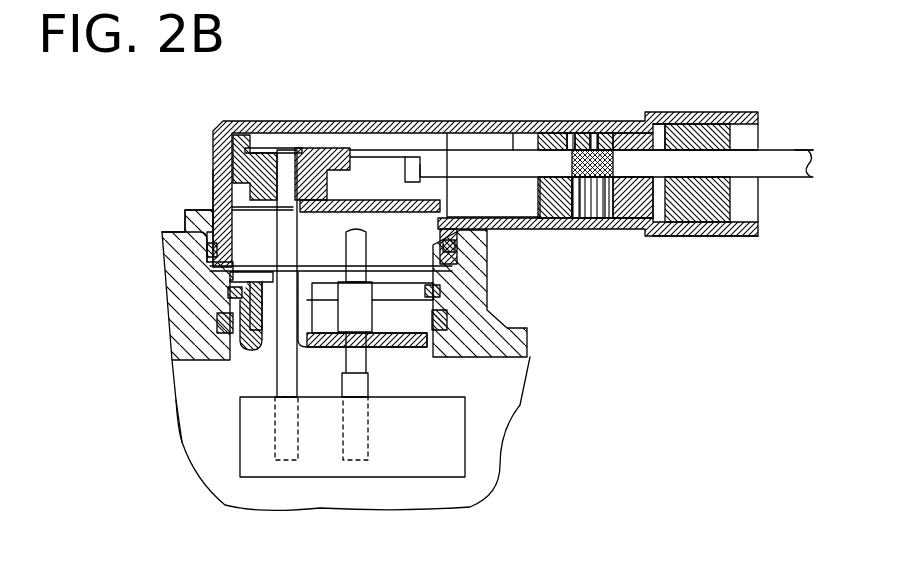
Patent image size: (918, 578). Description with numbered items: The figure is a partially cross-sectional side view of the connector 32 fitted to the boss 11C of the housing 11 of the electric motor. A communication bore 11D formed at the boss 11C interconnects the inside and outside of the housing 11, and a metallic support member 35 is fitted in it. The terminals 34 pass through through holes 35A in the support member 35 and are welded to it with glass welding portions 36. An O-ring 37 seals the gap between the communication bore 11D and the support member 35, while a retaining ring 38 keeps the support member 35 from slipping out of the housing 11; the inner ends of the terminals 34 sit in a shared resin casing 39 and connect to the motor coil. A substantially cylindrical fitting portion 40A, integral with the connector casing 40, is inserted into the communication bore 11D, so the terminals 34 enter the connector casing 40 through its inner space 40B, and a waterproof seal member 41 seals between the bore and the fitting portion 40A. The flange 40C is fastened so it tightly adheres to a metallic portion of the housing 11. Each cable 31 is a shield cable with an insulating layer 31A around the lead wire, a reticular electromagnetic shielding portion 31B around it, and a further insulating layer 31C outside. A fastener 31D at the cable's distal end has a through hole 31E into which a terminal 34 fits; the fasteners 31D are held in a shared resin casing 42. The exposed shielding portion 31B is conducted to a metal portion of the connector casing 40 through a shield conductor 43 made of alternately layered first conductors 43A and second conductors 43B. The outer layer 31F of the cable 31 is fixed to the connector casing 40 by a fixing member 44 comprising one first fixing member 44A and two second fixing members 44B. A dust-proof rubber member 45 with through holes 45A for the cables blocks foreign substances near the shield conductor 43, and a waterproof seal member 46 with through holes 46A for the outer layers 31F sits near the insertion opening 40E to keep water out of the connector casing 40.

The housing 11 is at (527, 328).
The boss 11C is at (185, 216).
The communication bore 11D is at (237, 370).
The cable 31 is at (800, 176).
The insulating layer 31A is at (493, 170).
The electromagnetic shielding portion 31B is at (615, 164).
The insulating layer 31C is at (762, 148).
The fastener 31D is at (340, 148).
The through hole 31E is at (293, 148).
The outer layer 31F is at (802, 148).
The connector 32 is at (379, 58).
The terminal 34 is at (346, 252).
The support member 35 is at (390, 365).
The through hole 35A is at (277, 362).
The glass welding portion 36 is at (332, 375).
The O-ring 37 is at (195, 330).
The retaining ring 38 is at (195, 305).
The resin casing 39 is at (382, 478).
The connector casing 40 is at (432, 121).
The fitting portion 40A is at (240, 277).
The inner space 40B is at (440, 240).
The flange 40C is at (213, 195).
The insertion opening 40E is at (760, 228).
The waterproof seal member 41 is at (170, 253).
The resin casing 42 is at (250, 212).
The shield conductor 43 is at (671, 43).
The first conductor 43A is at (582, 133).
The second conductor 43B is at (570, 133).
The fixing member 44 is at (682, 292).
The first fixing member 44A is at (612, 236).
The second fixing member 44B is at (607, 218).
The dust-proof rubber member 45 is at (550, 218).
The through hole 45A is at (518, 133).
The waterproof seal member 46 is at (705, 236).
The through hole 46A is at (712, 124).